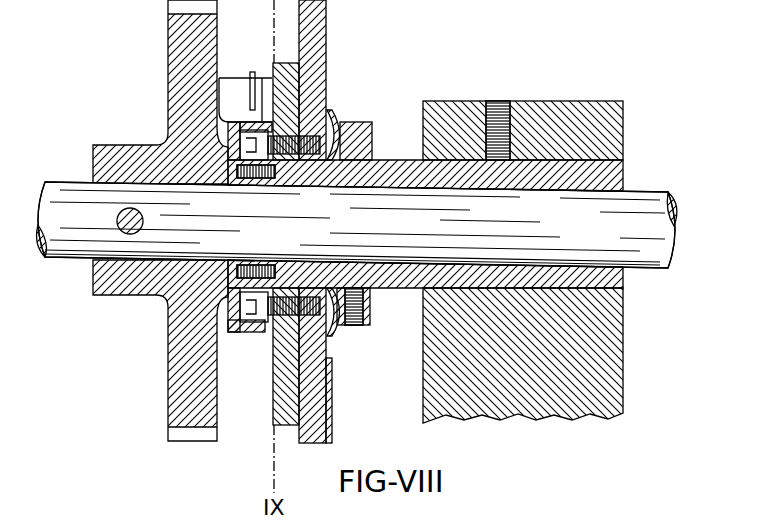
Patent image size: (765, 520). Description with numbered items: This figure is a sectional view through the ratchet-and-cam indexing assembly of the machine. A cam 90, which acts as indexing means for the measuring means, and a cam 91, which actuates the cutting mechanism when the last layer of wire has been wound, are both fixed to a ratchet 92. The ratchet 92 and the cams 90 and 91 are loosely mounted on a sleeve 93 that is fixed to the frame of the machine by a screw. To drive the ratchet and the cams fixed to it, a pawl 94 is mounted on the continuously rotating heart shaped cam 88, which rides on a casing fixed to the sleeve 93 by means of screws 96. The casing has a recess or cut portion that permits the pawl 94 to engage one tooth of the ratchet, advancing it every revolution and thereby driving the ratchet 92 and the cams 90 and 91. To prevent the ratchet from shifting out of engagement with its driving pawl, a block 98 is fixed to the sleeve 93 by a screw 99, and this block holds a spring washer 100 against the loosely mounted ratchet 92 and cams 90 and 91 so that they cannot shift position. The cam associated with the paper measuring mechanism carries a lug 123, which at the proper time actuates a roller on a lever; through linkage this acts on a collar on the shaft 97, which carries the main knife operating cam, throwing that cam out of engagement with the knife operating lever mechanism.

The heart shaped cam 88 is at (168, 412).
The cam 90 is at (280, 63).
The cam 91 is at (326, 52).
The ratchet 92 is at (242, 325).
The sleeve 93 is at (380, 161).
The pawl 94 is at (223, 83).
The screws 96 is at (252, 262).
The shaft 97 is at (652, 262).
The block 98 is at (345, 122).
The screw 99 is at (348, 325).
The spring washer 100 is at (332, 113).
The lug 123 is at (328, 400).